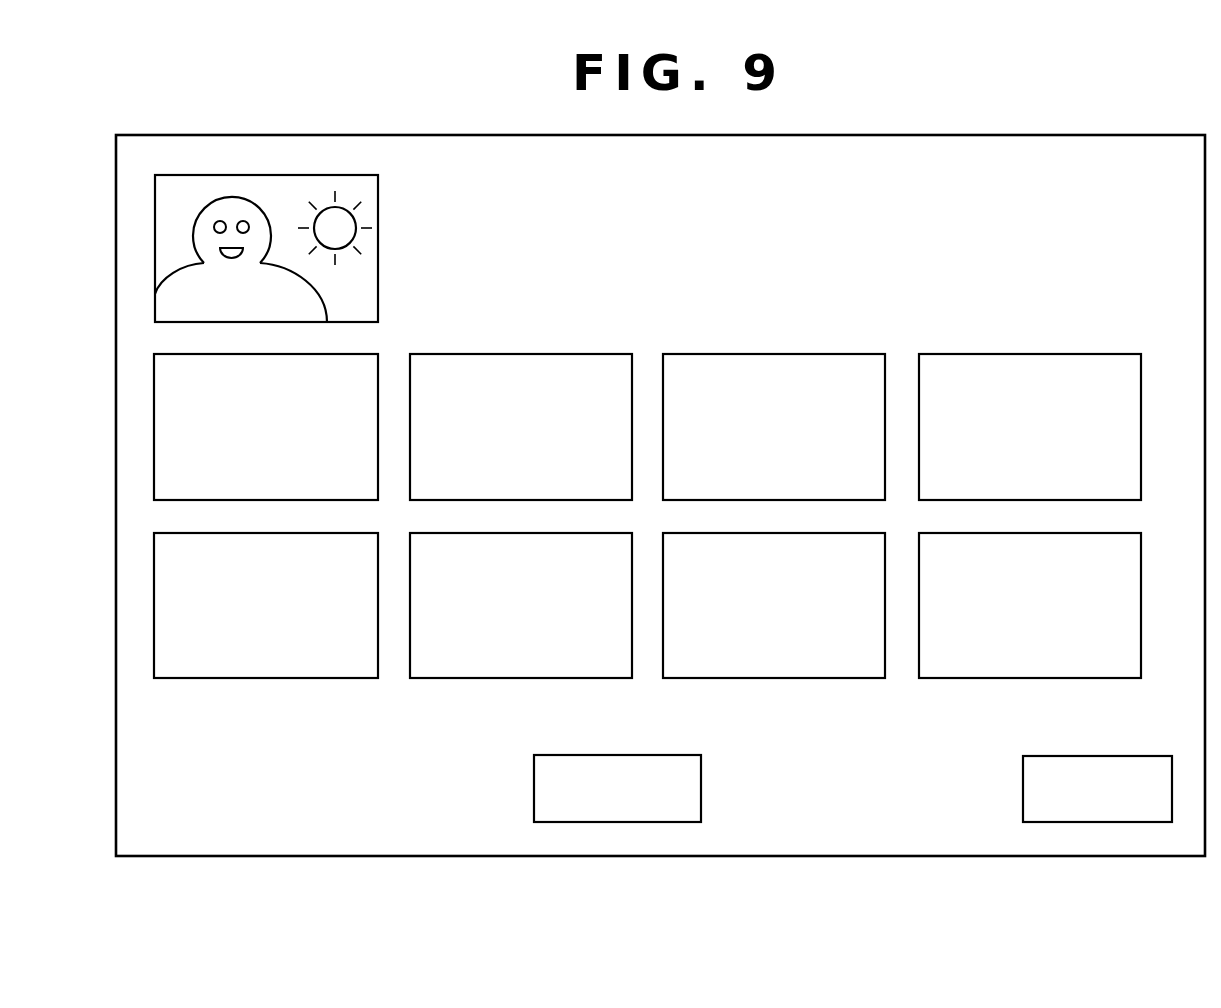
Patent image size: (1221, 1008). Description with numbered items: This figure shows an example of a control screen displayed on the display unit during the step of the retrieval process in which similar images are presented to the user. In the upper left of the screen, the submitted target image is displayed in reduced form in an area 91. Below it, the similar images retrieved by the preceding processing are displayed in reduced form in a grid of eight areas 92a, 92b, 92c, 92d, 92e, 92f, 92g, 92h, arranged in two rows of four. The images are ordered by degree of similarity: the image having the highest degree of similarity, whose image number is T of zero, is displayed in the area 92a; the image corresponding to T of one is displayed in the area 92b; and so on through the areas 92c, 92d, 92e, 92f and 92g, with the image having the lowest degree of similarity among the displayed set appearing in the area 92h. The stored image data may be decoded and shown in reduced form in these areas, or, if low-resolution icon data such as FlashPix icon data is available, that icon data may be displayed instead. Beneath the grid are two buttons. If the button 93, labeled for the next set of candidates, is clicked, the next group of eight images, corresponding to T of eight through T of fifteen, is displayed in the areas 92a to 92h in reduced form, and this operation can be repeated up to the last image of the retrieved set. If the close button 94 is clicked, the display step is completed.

The area 91 is at (378, 197).
The area 92a is at (378, 354).
The area 92b is at (552, 354).
The area 92c is at (794, 354).
The area 92d is at (1041, 354).
The area 92e is at (283, 678).
The area 92f is at (527, 678).
The area 92g is at (780, 678).
The area 92h is at (1030, 678).
The button 93 is at (702, 786).
The button 94 is at (1023, 785).